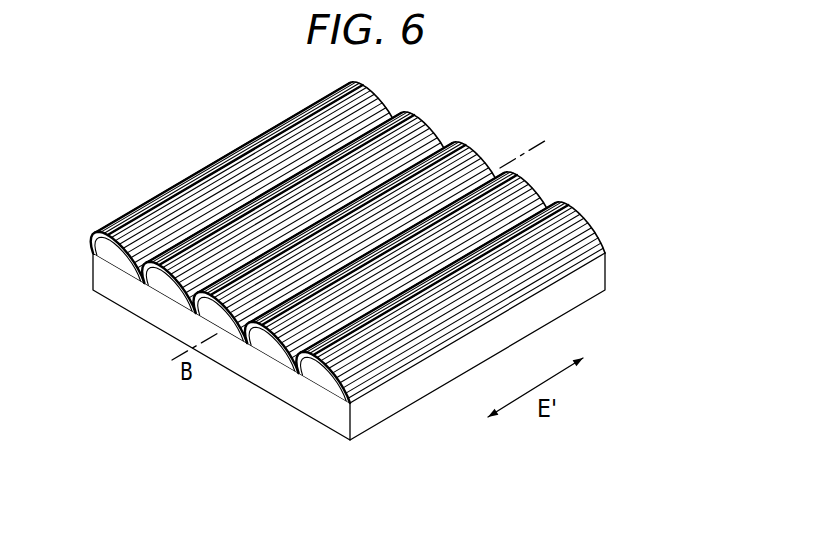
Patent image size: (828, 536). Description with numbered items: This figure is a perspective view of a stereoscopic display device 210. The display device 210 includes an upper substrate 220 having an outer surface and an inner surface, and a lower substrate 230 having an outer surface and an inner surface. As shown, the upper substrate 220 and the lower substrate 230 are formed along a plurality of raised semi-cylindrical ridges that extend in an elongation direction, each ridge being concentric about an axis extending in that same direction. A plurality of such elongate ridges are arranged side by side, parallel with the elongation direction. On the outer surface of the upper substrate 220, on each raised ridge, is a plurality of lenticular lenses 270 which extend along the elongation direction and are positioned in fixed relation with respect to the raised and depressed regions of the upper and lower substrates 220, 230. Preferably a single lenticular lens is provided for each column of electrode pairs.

The stereoscopic display device 210 is at (357, 278).
The upper substrate 220 is at (428, 297).
The lower substrate 230 is at (343, 390).
The lenticular lenses 270 is at (566, 226).